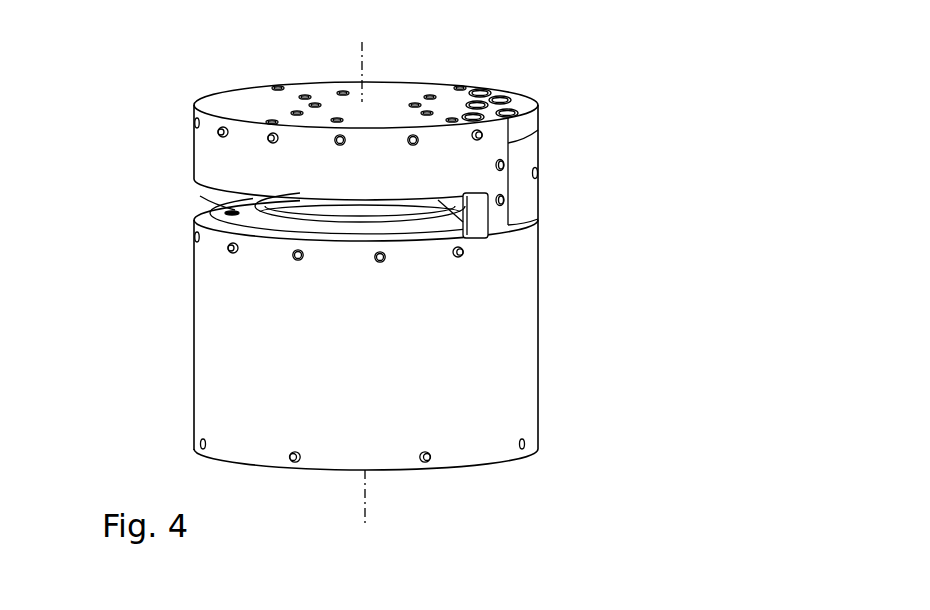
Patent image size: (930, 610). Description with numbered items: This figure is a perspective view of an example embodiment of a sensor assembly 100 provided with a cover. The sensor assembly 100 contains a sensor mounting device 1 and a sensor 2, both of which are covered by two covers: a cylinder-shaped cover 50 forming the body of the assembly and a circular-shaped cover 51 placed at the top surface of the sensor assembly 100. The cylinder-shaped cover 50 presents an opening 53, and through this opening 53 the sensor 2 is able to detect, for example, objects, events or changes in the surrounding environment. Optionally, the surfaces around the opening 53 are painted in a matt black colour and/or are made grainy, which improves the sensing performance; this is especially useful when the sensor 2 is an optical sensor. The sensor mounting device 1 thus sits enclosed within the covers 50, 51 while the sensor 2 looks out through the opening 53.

The sensor mounting device 1 is at (596, 83).
The sensor assembly 100 is at (404, 266).
The sensor 2 is at (317, 213).
The cylinder-shaped cover 50 is at (500, 342).
The circular-shaped cover 51 is at (263, 105).
The opening 53 is at (212, 193).